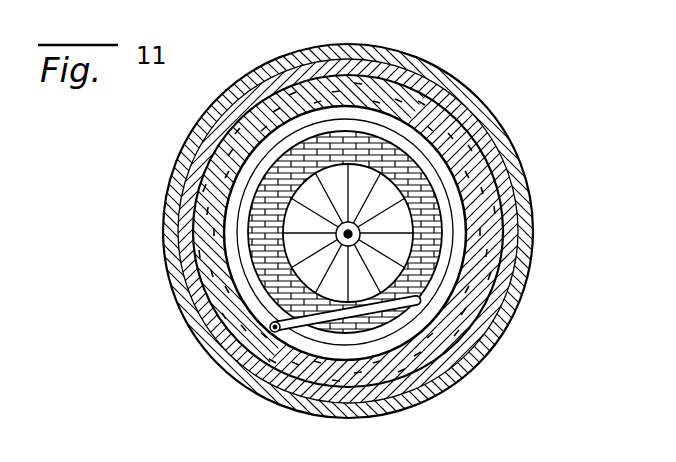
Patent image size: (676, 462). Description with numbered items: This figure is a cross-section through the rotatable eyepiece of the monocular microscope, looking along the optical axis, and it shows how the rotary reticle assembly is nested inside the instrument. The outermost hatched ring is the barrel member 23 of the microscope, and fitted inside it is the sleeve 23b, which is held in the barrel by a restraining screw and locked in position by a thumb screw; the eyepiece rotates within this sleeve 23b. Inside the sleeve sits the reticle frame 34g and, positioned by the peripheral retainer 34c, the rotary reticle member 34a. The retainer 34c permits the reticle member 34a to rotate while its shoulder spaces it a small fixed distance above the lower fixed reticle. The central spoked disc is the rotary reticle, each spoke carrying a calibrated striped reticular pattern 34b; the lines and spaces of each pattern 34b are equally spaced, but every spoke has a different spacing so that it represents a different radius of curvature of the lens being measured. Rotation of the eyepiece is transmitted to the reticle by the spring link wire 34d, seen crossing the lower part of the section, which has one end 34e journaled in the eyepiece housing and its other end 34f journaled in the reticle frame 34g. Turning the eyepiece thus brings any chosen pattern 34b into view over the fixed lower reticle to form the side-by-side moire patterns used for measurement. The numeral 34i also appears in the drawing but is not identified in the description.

The barrel member 23 is at (214, 343).
The sleeve 23b is at (216, 302).
The rotary reticle member 34a is at (248, 196).
The calibrated striped reticular pattern 34b is at (377, 248).
The peripheral retainer 34c is at (236, 240).
The spring link wire 34d is at (329, 318).
The end of spring link wire 34e is at (272, 333).
The end of spring link wire 34f is at (446, 335).
The reticle frame 34g is at (404, 147).
The hatched annular body 34i is at (423, 217).